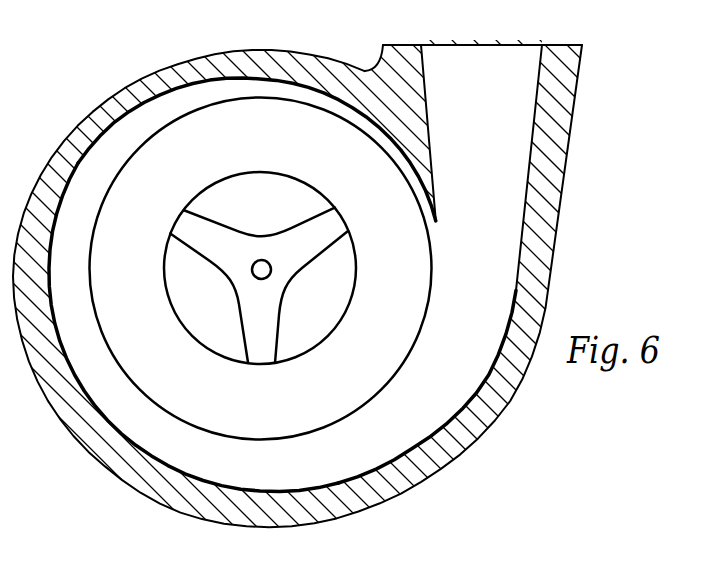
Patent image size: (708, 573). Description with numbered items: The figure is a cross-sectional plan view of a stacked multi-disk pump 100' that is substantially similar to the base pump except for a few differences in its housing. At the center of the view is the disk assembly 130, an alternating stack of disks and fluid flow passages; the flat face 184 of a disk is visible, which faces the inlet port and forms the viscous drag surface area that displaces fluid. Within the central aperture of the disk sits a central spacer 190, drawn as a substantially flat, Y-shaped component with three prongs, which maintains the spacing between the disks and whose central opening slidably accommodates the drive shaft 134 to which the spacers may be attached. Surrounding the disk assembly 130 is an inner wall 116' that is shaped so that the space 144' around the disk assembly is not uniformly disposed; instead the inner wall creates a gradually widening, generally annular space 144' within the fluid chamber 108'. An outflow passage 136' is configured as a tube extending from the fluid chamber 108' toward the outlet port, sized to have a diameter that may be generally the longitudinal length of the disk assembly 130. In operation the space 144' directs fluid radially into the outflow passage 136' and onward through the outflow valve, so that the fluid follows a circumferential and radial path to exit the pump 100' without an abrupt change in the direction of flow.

The pump 100' is at (297, 271).
The fluid chamber 108' is at (354, 286).
The inner wall 116' is at (297, 280).
The disk assembly 130 is at (258, 113).
The drive shaft 134 is at (260, 258).
The outflow passage 136' is at (508, 167).
The space 144' is at (193, 349).
The face 184 is at (412, 285).
The central spacer 190 is at (266, 335).